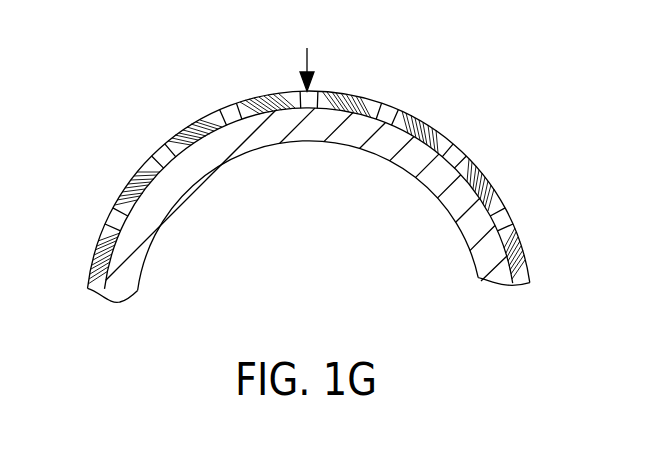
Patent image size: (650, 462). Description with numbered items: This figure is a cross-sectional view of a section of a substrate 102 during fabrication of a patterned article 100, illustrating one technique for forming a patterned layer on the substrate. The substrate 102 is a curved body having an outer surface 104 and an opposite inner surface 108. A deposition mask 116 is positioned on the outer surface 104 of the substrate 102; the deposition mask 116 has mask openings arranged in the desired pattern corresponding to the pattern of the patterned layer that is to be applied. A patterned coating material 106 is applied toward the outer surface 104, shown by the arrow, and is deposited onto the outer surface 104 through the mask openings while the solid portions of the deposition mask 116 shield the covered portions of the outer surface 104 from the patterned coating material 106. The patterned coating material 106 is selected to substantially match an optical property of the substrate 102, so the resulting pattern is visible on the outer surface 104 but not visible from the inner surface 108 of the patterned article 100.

The patterned article 100 is at (117, 52).
The substrate 102 is at (172, 208).
The outer surface 104 is at (437, 133).
The patterned coating material 106 is at (313, 55).
The inner surface 108 is at (275, 146).
The deposition mask 116 is at (181, 122).